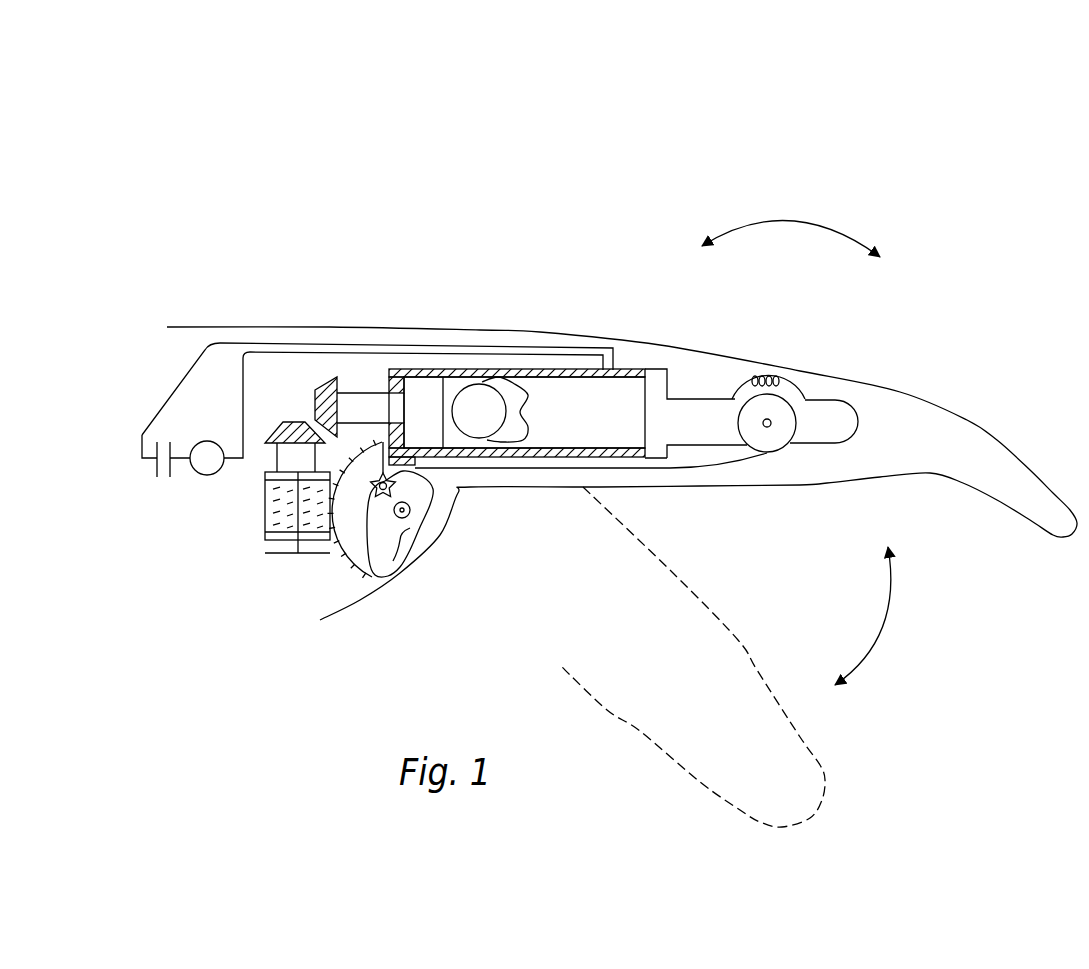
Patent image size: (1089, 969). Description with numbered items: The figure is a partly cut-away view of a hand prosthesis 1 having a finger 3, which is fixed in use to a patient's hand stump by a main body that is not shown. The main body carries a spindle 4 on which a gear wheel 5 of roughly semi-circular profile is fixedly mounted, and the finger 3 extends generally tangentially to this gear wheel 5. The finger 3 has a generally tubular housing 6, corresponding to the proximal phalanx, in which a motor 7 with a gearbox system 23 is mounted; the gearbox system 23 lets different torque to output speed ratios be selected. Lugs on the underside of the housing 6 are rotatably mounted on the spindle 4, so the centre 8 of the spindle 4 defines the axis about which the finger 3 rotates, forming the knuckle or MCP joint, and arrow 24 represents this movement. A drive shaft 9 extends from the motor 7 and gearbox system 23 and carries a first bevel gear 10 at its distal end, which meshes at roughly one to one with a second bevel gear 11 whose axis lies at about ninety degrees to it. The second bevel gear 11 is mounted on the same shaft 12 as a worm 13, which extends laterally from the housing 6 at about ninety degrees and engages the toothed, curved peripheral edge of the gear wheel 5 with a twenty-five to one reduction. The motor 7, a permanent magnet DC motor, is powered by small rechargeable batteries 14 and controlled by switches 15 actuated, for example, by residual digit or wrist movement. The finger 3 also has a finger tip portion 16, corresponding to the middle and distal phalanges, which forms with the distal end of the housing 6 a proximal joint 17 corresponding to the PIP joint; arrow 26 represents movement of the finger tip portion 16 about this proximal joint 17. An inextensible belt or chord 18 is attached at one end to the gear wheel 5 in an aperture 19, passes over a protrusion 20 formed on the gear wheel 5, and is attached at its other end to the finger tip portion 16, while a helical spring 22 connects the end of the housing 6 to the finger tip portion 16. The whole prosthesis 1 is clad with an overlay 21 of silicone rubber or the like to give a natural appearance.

The hand prosthesis 1 is at (520, 183).
The finger 3 is at (637, 328).
The spindle 4 is at (408, 512).
The gear wheel 5 is at (383, 563).
The tubular housing 6 is at (507, 372).
The motor 7 is at (505, 411).
The centre of the spindle 8 is at (406, 514).
The drive shaft 9 is at (397, 403).
The first bevel gear 10 is at (343, 408).
The second bevel gear 11 is at (283, 418).
The shaft 12 is at (305, 452).
The worm 13 is at (287, 516).
The rechargeable batteries 14 is at (157, 474).
The switches 15 is at (204, 466).
The finger tip portion 16 is at (850, 386).
The proximal joint 17 is at (767, 436).
The inextensible belt or chord 18 is at (667, 467).
The aperture 19 is at (372, 578).
The protrusion 20 is at (423, 492).
The overlay 21 is at (717, 353).
The helical spring 22 is at (765, 361).
The gearbox system 23 is at (441, 424).
The arrow 24 is at (890, 621).
The arrow 26 is at (793, 215).